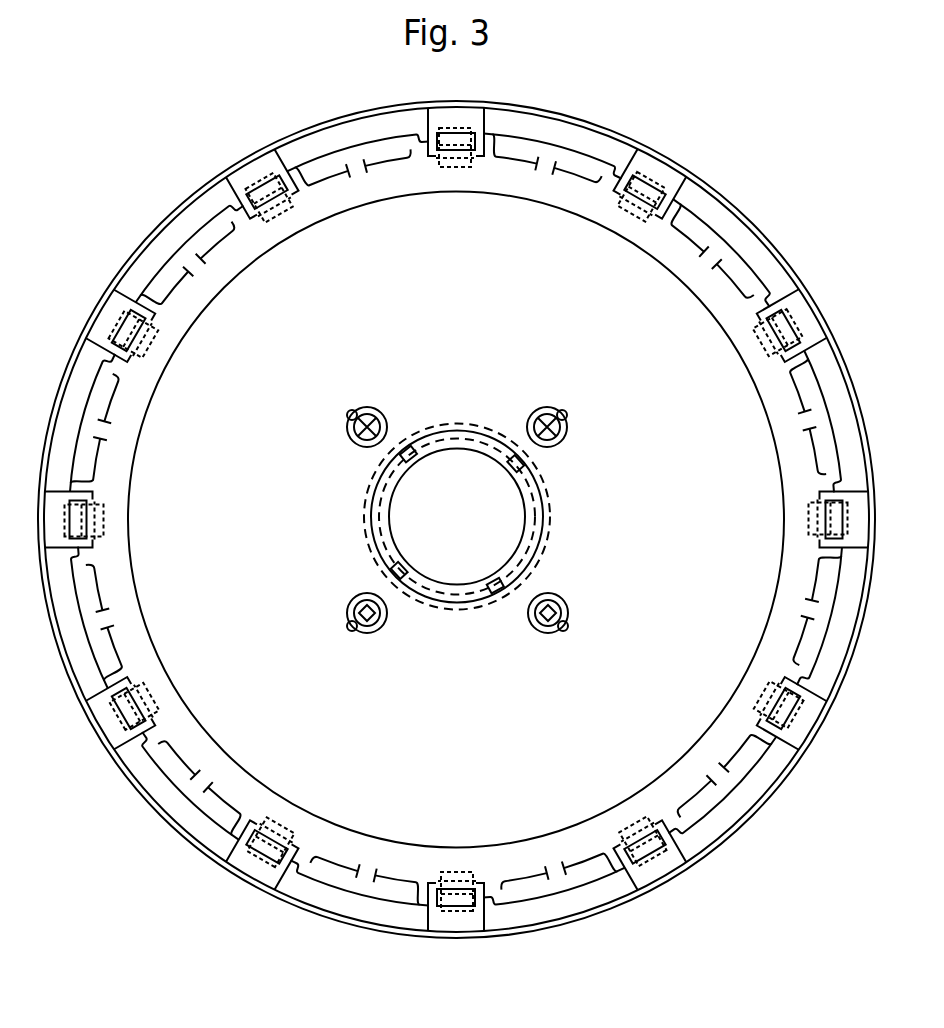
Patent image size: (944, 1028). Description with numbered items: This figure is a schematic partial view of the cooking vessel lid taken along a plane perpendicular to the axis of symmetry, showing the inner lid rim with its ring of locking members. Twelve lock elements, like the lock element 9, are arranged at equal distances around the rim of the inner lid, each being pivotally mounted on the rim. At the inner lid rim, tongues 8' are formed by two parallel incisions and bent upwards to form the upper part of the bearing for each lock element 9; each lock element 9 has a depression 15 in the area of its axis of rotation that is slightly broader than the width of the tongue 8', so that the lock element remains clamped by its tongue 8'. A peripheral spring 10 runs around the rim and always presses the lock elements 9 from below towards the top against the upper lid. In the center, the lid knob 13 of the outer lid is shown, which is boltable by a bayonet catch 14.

The lock element 9 is at (250, 173).
The peripheral spring 10 is at (212, 248).
The tongue 8' is at (277, 220).
The depression 15 is at (290, 207).
The lid knob 13 is at (430, 422).
The bayonet catch 14 is at (480, 436).